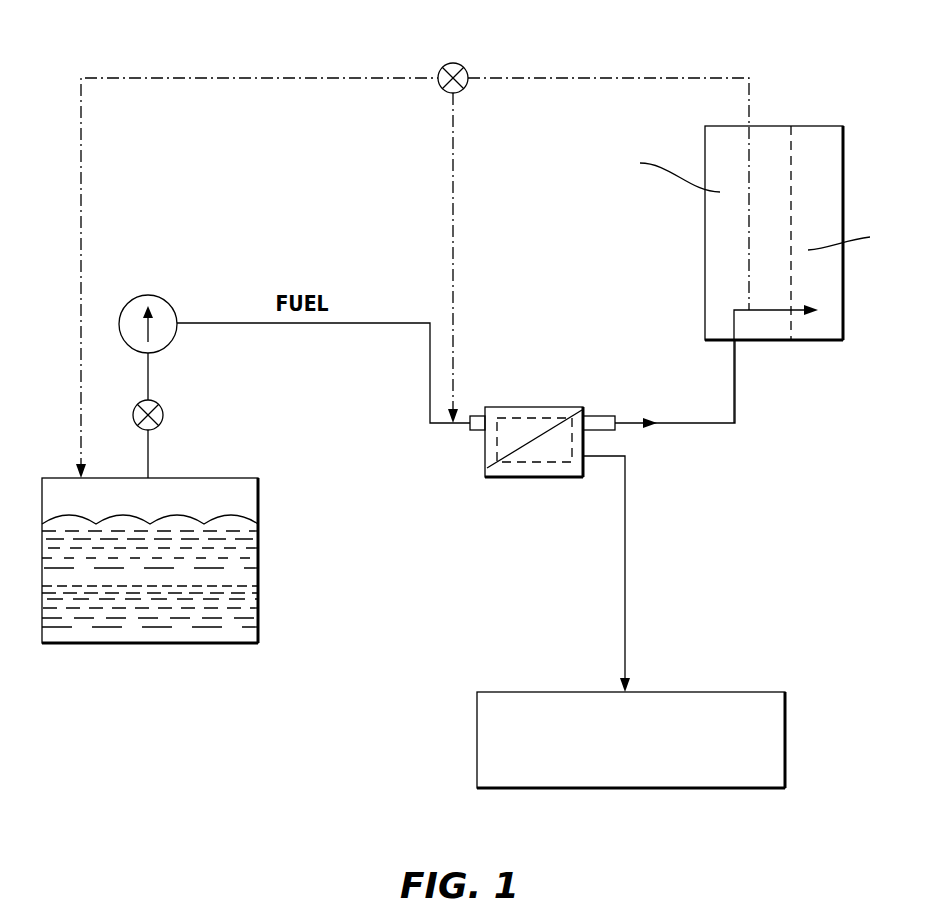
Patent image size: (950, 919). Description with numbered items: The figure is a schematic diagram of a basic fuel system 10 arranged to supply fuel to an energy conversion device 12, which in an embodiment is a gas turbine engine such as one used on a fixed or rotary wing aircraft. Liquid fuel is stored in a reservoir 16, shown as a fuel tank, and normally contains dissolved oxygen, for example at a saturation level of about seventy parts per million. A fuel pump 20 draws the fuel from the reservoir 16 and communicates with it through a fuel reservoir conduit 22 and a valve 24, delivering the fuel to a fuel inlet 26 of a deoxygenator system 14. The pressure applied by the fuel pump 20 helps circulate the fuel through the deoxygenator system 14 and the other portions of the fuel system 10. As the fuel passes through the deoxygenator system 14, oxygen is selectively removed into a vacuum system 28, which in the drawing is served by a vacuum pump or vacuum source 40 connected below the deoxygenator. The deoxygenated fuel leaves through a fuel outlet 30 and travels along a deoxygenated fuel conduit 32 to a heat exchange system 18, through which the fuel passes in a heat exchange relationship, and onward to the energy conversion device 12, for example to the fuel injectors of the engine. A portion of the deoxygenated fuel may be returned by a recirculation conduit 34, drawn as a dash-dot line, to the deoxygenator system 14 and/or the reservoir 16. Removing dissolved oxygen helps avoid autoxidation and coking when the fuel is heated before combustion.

The fuel system 10 is at (833, 88).
The energy conversion device 12 is at (818, 143).
The deoxygenator system 14 is at (547, 350).
The reservoir 16 is at (85, 633).
The heat exchange system 18 is at (720, 262).
The fuel pump 20 is at (148, 295).
The fuel reservoir conduit 22 is at (150, 378).
The valve 24 is at (164, 415).
The fuel inlet 26 is at (478, 432).
The vacuum system 28 is at (722, 528).
The fuel outlet 30 is at (595, 415).
The deoxygenated fuel conduit 32 is at (735, 408).
The recirculation conduit 34 is at (524, 78).
The vacuum pump or vacuum source 40 is at (790, 722).